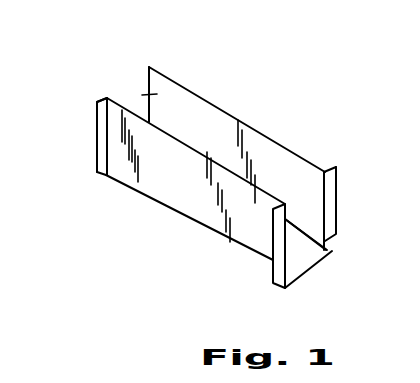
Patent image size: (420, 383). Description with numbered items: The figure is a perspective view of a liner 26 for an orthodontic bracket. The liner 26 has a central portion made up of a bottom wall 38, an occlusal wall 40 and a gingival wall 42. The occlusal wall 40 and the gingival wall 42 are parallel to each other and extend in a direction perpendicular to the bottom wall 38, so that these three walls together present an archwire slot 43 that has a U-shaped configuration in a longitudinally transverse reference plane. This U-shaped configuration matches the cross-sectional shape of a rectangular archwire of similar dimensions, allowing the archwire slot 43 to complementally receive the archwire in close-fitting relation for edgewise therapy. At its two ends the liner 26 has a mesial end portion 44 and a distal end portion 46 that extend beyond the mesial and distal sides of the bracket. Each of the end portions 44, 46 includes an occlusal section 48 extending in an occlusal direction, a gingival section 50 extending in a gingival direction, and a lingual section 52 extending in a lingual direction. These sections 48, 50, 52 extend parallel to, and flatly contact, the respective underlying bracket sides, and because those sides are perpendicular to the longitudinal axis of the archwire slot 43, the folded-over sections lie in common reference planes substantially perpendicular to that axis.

The liner 26 is at (195, 99).
The bottom wall 38 is at (300, 243).
The occlusal wall 40 is at (172, 198).
The gingival wall 42 is at (267, 135).
The archwire slot 43 is at (157, 96).
The mesial end portion 44 is at (342, 168).
The distal end portion 46 is at (92, 102).
The occlusal section 48 is at (98, 166).
The gingival section 50 is at (153, 67).
The lingual section 52 is at (112, 177).